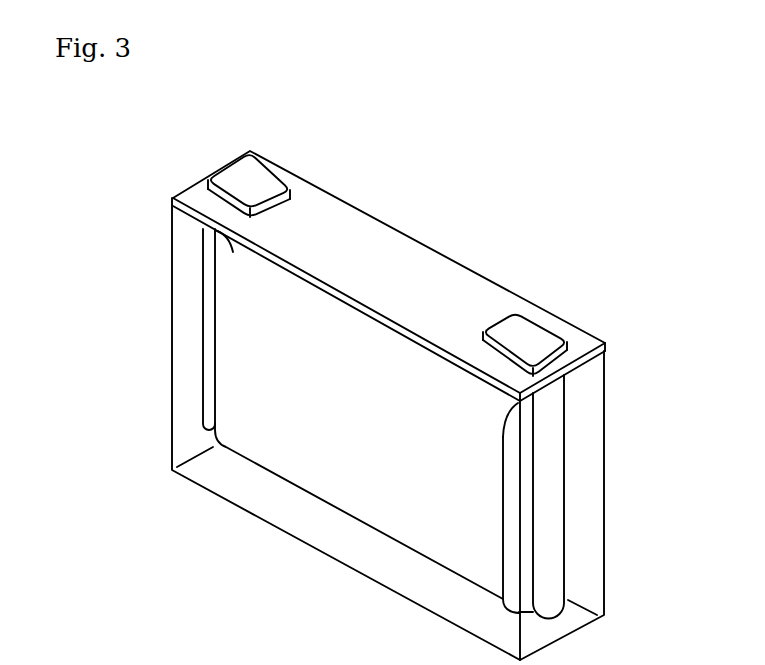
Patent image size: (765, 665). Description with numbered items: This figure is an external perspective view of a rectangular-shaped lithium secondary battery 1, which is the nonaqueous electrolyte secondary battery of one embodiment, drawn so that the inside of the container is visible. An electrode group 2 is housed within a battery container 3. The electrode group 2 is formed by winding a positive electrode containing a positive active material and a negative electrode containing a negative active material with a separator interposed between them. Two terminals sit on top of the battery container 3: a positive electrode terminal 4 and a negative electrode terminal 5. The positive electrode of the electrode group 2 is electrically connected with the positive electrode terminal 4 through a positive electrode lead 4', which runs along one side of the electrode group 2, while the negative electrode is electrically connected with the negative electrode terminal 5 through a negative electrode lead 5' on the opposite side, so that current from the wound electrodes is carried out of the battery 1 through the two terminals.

The nonaqueous electrolyte secondary battery 1 is at (503, 234).
The electrode group 2 is at (374, 421).
The battery container 3 is at (172, 292).
The positive electrode terminal 4 is at (249, 161).
The positive electrode lead 4' is at (173, 329).
The negative electrode terminal 5 is at (525, 316).
The negative electrode lead 5' is at (589, 497).